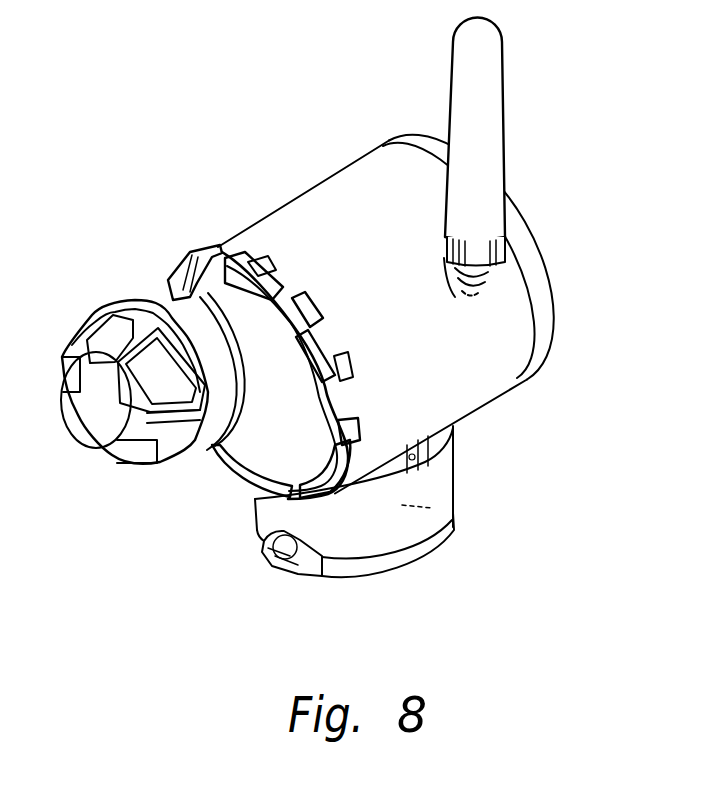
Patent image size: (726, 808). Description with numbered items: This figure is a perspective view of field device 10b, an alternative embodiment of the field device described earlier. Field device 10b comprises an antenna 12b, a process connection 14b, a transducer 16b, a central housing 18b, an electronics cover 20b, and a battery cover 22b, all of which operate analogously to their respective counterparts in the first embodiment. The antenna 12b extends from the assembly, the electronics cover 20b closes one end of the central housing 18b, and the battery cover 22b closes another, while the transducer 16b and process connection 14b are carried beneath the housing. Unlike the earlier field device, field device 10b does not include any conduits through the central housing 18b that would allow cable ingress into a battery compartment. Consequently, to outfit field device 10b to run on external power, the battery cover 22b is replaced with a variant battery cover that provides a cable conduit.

The field device 10b is at (312, 307).
The antenna 12b is at (488, 55).
The process connection 14b is at (432, 552).
The transducer 16b is at (433, 508).
The central housing 18b is at (483, 381).
The electronics cover 20b is at (540, 291).
The battery cover 22b is at (67, 350).